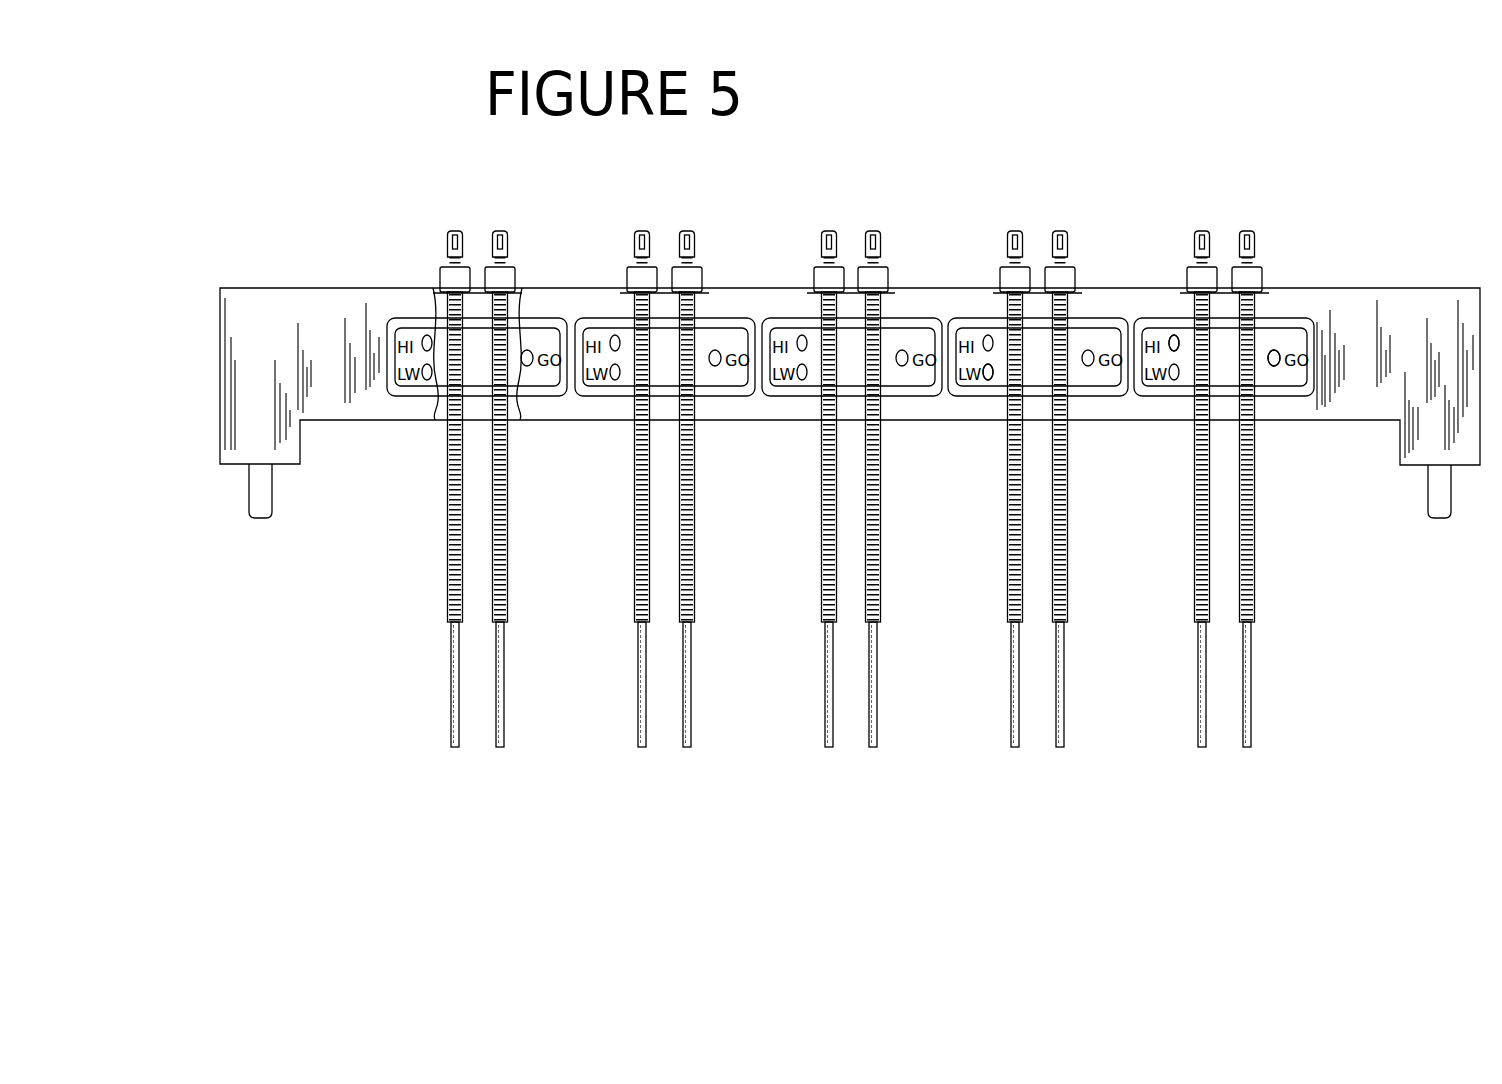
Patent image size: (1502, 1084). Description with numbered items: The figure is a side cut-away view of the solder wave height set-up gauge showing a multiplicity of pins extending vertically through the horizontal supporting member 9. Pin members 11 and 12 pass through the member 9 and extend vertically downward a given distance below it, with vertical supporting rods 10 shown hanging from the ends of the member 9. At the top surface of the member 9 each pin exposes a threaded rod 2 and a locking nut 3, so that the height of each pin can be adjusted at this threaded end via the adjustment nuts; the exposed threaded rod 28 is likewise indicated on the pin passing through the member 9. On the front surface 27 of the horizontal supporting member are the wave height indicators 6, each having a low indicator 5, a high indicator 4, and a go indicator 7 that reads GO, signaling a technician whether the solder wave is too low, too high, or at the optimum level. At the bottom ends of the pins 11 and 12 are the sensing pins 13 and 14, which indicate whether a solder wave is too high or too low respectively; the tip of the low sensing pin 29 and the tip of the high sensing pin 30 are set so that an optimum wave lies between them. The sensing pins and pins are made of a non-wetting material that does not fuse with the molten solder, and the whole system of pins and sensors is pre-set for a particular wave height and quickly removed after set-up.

The threaded rod 2 is at (690, 240).
The locking nut 3 is at (492, 283).
The high indicator 4 is at (1168, 343).
The low indicator 5 is at (987, 363).
The wave height indicator 6 is at (1285, 387).
The go indicator 7 is at (1275, 350).
The horizontal supporting member 9 is at (255, 405).
The vertical supporting rods 10 is at (262, 488).
The pin member 11 is at (874, 497).
The pin member 12 is at (827, 493).
The sensing pin 13 is at (886, 718).
The sensing pin 14 is at (744, 733).
The front surface of horizontal supporting member 27 is at (322, 302).
The exposed threaded rod 28 is at (458, 375).
The tip of low sensing pin 29 is at (458, 745).
The tip of high sensing pin 30 is at (497, 748).